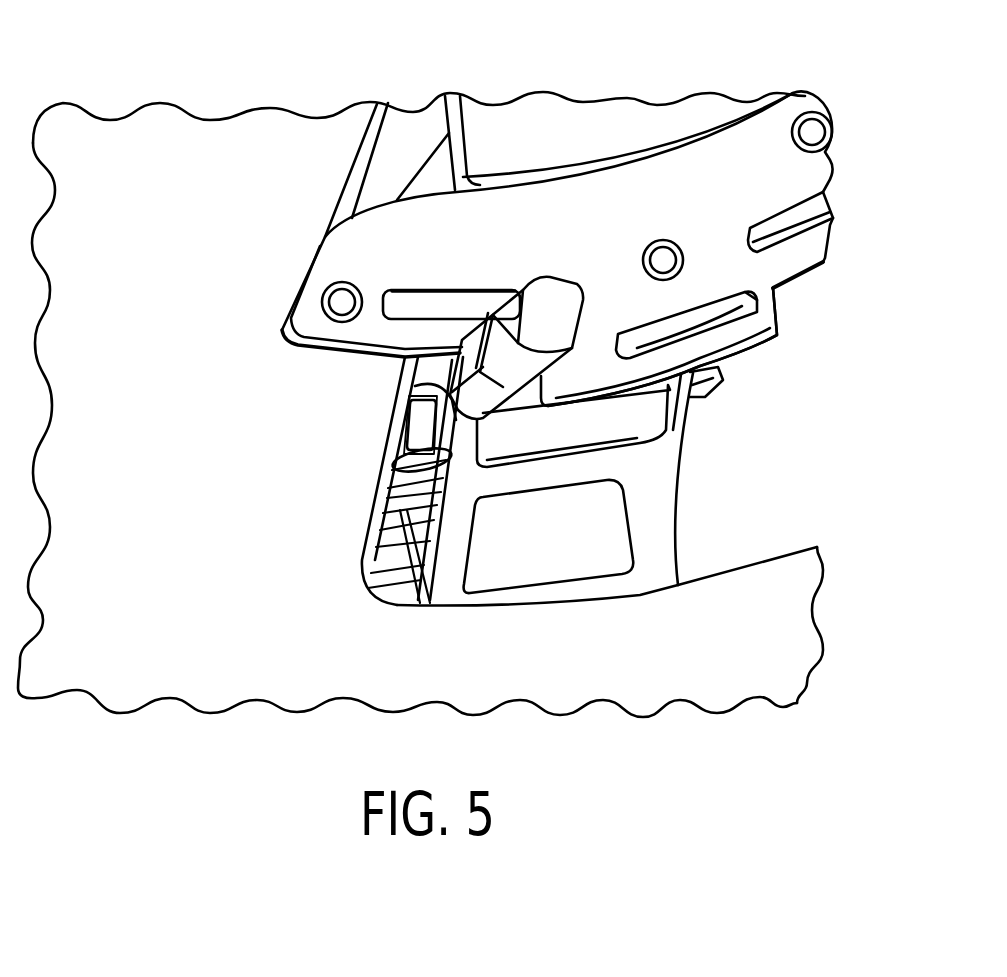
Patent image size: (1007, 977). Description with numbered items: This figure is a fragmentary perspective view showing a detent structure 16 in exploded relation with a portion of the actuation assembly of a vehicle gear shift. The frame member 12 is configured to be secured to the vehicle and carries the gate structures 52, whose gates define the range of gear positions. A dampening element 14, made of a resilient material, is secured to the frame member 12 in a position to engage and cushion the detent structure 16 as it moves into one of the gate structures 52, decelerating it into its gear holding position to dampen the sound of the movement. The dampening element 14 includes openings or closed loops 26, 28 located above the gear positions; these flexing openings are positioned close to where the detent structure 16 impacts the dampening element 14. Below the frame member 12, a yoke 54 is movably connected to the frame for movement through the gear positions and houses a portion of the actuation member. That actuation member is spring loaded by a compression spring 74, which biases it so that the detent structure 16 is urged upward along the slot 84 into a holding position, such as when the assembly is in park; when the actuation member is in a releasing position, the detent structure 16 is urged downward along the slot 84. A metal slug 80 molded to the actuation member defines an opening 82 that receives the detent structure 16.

The frame member 12 is at (553, 125).
The dampening element 14 is at (700, 167).
The detent structure 16 is at (565, 300).
The opening 26 is at (470, 305).
The opening 28 is at (743, 313).
The gate structures 52 is at (772, 372).
The yoke 54 is at (657, 573).
The compression spring 74 is at (403, 520).
The metal slug 80 is at (400, 458).
The opening 82 is at (413, 430).
The slot 84 is at (415, 370).